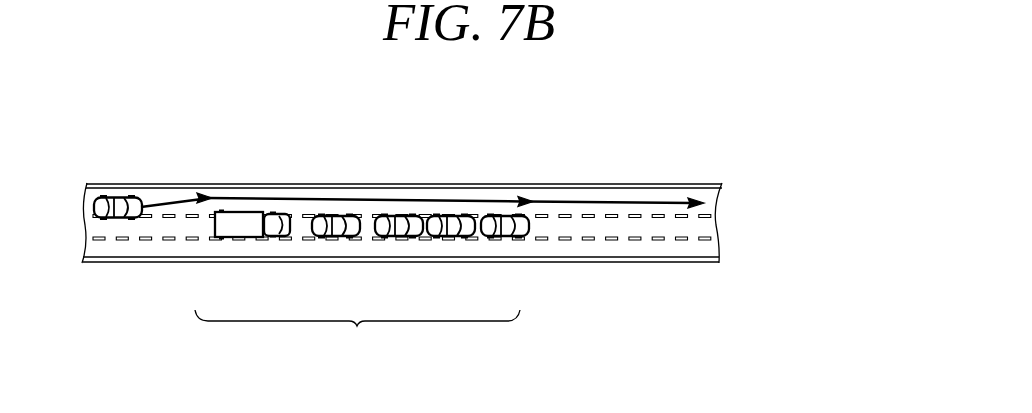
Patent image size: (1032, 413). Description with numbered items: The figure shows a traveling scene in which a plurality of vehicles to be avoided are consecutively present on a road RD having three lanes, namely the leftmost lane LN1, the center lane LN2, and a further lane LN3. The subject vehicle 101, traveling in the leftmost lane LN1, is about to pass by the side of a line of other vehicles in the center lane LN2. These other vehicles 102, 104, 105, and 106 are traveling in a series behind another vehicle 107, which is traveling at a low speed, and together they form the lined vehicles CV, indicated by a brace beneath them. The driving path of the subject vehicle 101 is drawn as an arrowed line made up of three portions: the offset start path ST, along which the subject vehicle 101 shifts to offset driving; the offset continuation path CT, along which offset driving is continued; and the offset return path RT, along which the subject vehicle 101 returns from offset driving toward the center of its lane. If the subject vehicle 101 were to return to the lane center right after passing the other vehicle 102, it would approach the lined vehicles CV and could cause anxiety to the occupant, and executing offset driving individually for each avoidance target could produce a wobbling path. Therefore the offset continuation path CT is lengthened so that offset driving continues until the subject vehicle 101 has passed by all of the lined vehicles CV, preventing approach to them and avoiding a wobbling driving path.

The subject vehicle 101 is at (114, 219).
The other vehicle 102 is at (238, 239).
The other vehicle 104 is at (333, 238).
The other vehicle 105 is at (395, 238).
The other vehicle 106 is at (447, 238).
The other vehicle 107 is at (507, 238).
The road RD is at (108, 183).
The leftmost lane LN1 is at (87, 203).
The center lane LN2 is at (90, 223).
The lane LN3 is at (90, 250).
The offset start path ST is at (178, 200).
The offset continuation path CT is at (318, 202).
The offset return path RT is at (613, 203).
The lined vehicles CV is at (357, 333).